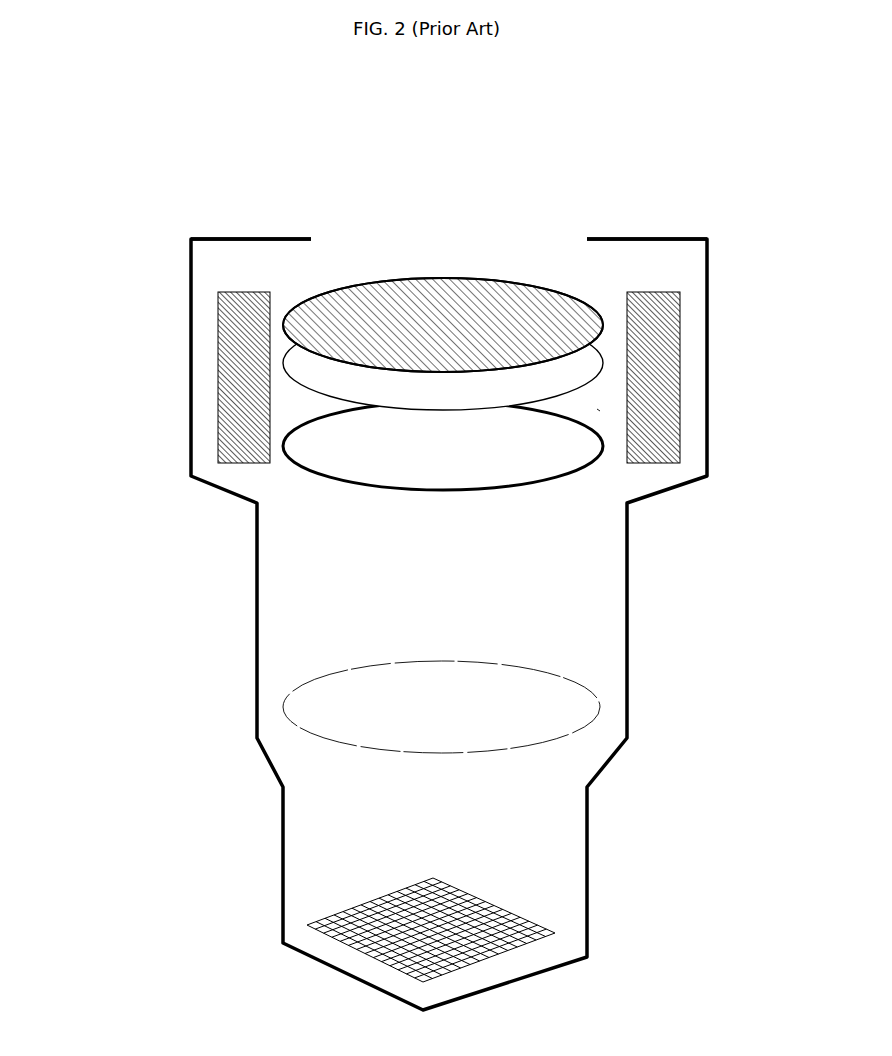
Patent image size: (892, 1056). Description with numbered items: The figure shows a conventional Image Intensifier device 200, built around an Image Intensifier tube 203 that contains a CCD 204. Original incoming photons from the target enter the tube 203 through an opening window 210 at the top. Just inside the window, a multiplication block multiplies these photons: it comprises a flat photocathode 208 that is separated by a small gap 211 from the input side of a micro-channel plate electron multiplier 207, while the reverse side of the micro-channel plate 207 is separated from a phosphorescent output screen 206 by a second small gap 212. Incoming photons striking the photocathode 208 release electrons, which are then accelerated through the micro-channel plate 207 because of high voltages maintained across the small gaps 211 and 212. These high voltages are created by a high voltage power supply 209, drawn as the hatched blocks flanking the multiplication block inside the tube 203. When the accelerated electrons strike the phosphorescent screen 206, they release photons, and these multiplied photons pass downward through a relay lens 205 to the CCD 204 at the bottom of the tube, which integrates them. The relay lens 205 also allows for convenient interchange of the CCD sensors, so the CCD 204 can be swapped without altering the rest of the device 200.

The Image Intensifier device 200 is at (356, 129).
The Image Intensifier tube 203 is at (253, 595).
The CCD 204 is at (515, 963).
The relay lens 205 is at (573, 713).
The phosphorescent output screen 206 is at (543, 462).
The micro-channel plate electron multiplier 207 is at (558, 377).
The flat photocathode 208 is at (567, 296).
The high voltage power supply 209 is at (217, 373).
The opening window 210 is at (322, 233).
The small gap 211 is at (603, 343).
The small gap 212 is at (597, 410).